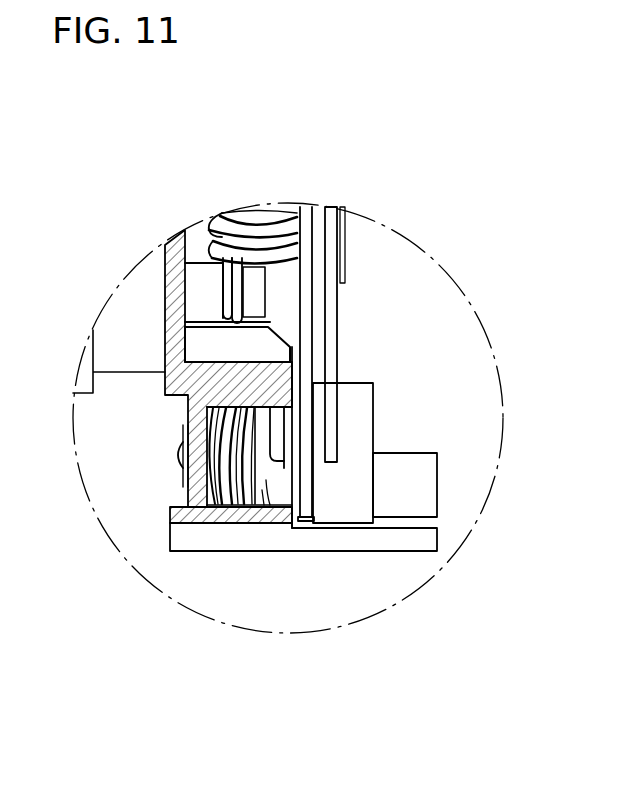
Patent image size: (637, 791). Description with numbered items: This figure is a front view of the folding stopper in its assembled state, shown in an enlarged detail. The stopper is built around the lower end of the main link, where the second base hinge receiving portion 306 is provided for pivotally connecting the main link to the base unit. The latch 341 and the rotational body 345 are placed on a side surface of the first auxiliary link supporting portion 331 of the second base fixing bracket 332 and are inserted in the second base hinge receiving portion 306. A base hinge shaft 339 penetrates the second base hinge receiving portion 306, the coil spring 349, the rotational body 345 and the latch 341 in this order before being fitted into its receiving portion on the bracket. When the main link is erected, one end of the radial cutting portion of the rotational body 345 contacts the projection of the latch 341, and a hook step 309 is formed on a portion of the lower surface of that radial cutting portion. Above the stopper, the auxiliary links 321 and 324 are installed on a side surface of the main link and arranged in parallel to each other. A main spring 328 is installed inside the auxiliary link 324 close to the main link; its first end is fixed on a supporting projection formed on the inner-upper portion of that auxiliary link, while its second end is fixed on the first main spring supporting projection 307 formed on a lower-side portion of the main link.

The second base hinge receiving portion 306 is at (193, 514).
The first main spring supporting projection 307 is at (198, 280).
The hook step 309 is at (278, 408).
The auxiliary link 321 is at (337, 314).
The auxiliary link 324 is at (308, 351).
The main spring 328 is at (264, 212).
The first auxiliary link supporting portion 331 is at (363, 430).
The second base fixing bracket 332 is at (400, 543).
The base hinge shaft 339 is at (177, 460).
The latch 341 is at (282, 500).
The rotational body 345 is at (265, 497).
The coil spring 349 is at (227, 494).